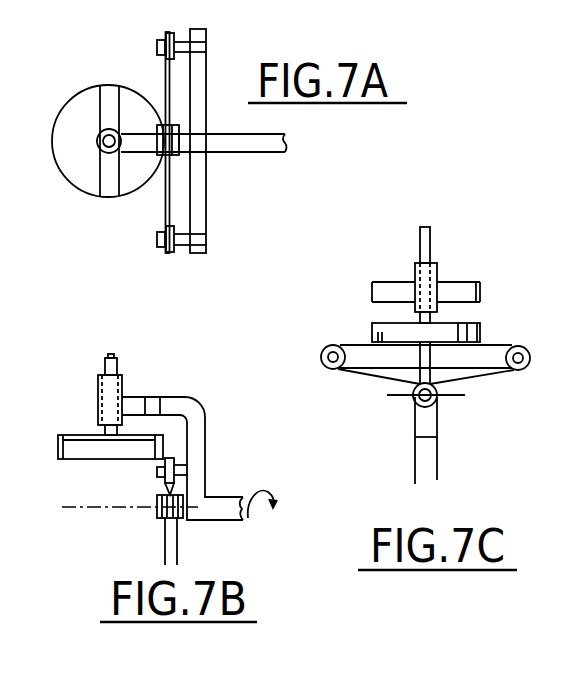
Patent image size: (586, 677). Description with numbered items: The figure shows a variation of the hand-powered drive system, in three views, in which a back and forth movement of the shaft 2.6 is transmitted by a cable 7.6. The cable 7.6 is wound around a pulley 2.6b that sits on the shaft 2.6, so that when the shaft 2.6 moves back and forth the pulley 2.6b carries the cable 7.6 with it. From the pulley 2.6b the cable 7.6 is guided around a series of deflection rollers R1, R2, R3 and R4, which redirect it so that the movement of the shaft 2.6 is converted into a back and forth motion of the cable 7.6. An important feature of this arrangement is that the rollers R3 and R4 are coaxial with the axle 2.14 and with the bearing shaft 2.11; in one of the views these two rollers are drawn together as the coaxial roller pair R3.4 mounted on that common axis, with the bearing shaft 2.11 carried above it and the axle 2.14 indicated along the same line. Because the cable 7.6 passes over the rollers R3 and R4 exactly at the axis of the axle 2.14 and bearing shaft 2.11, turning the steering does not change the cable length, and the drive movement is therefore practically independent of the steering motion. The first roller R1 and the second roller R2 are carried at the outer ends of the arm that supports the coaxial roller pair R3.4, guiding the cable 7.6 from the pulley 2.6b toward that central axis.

In FIG. 7A, the deflection roller R1 is at (165, 57).
In FIG. 7C, the deflection roller R1 is at (333, 344).
In FIG. 7A, the deflection roller R2 is at (158, 243).
In FIG. 7C, the deflection roller R2 is at (522, 347).
In FIG. 7A, the deflection roller R3 is at (166, 132).
In FIG. 7A, the deflection roller R4 is at (178, 132).
In FIG. 7C, the coaxial deflection rollers R3.4 is at (416, 398).
In FIG. 7C, the shaft 2.6 is at (420, 243).
In FIG. 7B, the pulley 2.6b is at (77, 435).
In FIG. 7B, the bearing shaft 2.11 is at (160, 397).
In FIG. 7C, the bearing shaft 2.11 is at (465, 282).
In FIG. 7B, the axle 2.14 is at (90, 492).
In FIG. 7C, the cable 7.6 is at (431, 422).